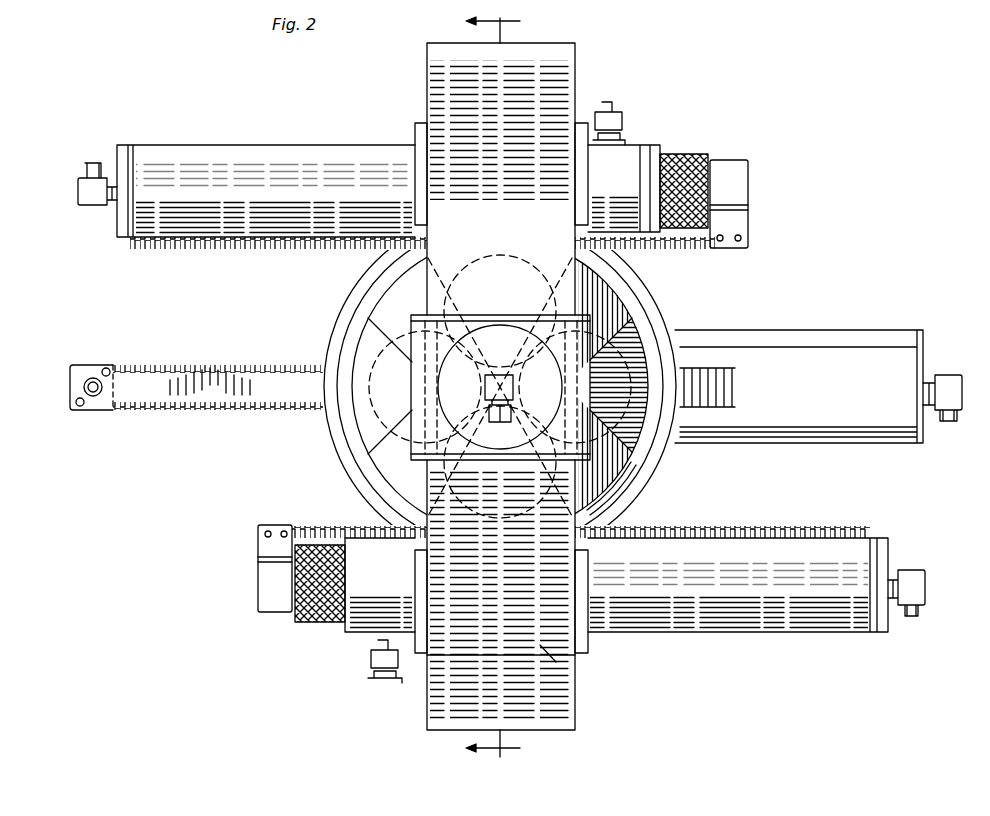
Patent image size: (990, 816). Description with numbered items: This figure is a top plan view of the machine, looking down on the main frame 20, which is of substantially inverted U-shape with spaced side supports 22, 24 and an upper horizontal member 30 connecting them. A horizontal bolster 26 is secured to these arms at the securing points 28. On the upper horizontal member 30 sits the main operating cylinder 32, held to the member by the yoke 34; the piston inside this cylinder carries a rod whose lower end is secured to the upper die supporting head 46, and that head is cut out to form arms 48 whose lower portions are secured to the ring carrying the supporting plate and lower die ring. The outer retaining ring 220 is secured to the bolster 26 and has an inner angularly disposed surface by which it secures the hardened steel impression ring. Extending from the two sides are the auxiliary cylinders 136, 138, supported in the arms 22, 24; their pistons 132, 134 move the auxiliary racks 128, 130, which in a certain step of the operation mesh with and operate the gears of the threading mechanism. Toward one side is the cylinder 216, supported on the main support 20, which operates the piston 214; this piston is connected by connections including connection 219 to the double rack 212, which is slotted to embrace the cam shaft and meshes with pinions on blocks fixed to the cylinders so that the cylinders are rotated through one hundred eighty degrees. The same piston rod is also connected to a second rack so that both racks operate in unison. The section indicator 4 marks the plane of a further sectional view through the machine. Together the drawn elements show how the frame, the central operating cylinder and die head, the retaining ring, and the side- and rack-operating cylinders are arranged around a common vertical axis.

The section line 4- 4 is at (493, 392).
The main frame 20 is at (548, 655).
The side support 22 is at (560, 722).
The side support 24 is at (578, 56).
The bolster 26 is at (346, 469).
The securing points 28 is at (418, 127).
The upper horizontal member 30 is at (432, 282).
The main operating cylinder 32 is at (437, 402).
The yoke 34 is at (656, 388).
The upper die supporting head 46 is at (387, 303).
The arms 48 is at (637, 470).
The auxiliary rack 128 is at (782, 526).
The auxiliary rack 130 is at (684, 246).
The piston 132 is at (258, 597).
The piston 134 is at (740, 180).
The auxiliary cylinder 136 is at (784, 632).
The auxiliary cylinder 138 is at (244, 153).
The double rack 212 is at (178, 405).
The piston 214 is at (240, 405).
The cylinder 216 is at (160, 368).
The connection 219 is at (95, 411).
The outer retaining ring 220 is at (346, 441).